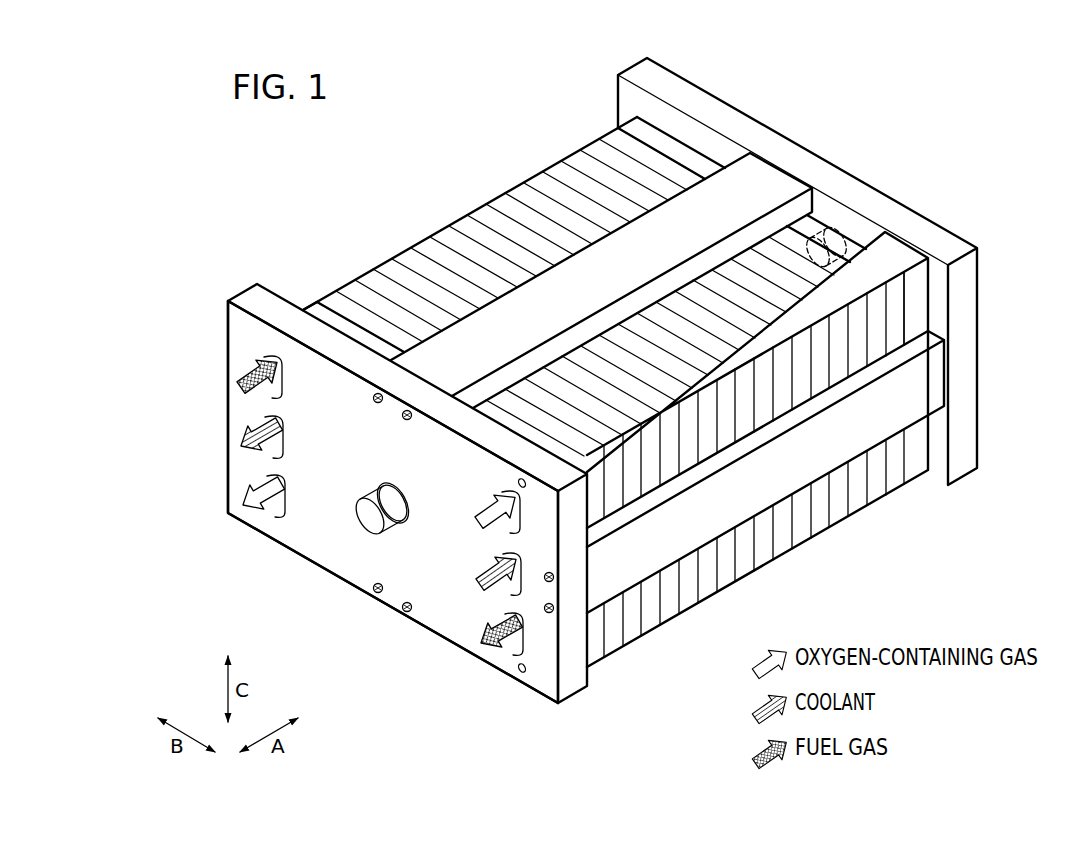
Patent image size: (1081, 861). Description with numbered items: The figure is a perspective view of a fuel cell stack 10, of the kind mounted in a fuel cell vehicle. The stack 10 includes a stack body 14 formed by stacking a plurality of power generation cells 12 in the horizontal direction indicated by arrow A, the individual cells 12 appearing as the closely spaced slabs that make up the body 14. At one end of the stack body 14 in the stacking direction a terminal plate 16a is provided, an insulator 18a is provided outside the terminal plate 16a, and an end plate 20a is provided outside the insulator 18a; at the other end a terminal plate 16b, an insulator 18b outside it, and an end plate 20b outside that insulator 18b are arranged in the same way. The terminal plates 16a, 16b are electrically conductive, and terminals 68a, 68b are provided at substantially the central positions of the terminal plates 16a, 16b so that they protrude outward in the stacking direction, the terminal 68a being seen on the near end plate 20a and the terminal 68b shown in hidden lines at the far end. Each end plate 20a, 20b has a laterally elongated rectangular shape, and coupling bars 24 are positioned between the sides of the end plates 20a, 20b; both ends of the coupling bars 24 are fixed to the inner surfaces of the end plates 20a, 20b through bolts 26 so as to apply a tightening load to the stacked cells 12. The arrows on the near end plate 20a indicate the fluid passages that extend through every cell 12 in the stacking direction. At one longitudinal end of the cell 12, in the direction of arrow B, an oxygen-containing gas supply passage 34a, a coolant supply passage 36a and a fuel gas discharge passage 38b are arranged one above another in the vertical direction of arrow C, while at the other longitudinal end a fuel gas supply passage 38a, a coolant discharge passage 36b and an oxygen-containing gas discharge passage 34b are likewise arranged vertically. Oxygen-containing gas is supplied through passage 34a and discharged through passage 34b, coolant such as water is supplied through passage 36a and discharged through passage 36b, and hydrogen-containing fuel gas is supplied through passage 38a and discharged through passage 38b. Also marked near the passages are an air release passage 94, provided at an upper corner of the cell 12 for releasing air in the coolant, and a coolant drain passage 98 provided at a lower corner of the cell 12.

The fuel cell stack 10 is at (311, 164).
The power generation cell 12 is at (494, 193).
The stack body 14 is at (453, 152).
The terminal plate 16a is at (355, 350).
The terminal plate 16b is at (672, 160).
The insulator 18a is at (316, 312).
The insulator 18b is at (658, 136).
The end plate 20a is at (225, 322).
The end plate 20b is at (976, 244).
The coupling bar 24 is at (770, 180).
The bolt 26 is at (375, 401).
The oxygen-containing gas supply passage 34a is at (498, 492).
The oxygen-containing gas discharge passage 34b is at (272, 481).
The coolant supply passage 36a is at (507, 583).
The coolant discharge passage 36b is at (272, 418).
The fuel gas supply passage 38a is at (270, 344).
The fuel gas discharge passage 38b is at (508, 643).
The terminal 68a is at (356, 516).
The terminal 68b is at (841, 238).
The air release passage 94 is at (524, 489).
The coolant drain passage 98 is at (521, 675).